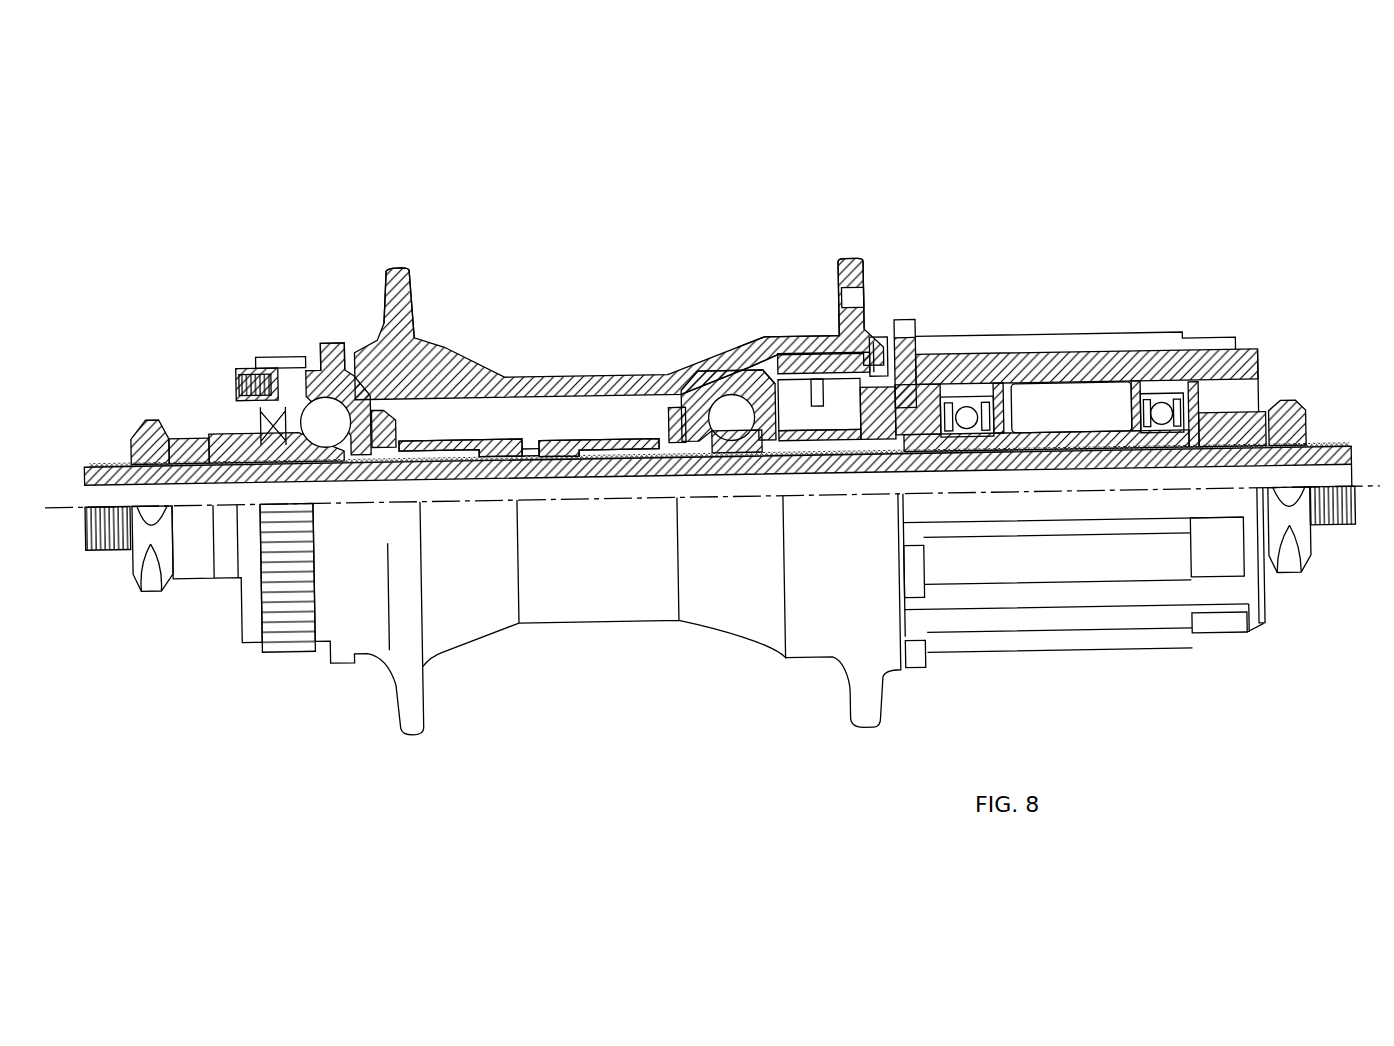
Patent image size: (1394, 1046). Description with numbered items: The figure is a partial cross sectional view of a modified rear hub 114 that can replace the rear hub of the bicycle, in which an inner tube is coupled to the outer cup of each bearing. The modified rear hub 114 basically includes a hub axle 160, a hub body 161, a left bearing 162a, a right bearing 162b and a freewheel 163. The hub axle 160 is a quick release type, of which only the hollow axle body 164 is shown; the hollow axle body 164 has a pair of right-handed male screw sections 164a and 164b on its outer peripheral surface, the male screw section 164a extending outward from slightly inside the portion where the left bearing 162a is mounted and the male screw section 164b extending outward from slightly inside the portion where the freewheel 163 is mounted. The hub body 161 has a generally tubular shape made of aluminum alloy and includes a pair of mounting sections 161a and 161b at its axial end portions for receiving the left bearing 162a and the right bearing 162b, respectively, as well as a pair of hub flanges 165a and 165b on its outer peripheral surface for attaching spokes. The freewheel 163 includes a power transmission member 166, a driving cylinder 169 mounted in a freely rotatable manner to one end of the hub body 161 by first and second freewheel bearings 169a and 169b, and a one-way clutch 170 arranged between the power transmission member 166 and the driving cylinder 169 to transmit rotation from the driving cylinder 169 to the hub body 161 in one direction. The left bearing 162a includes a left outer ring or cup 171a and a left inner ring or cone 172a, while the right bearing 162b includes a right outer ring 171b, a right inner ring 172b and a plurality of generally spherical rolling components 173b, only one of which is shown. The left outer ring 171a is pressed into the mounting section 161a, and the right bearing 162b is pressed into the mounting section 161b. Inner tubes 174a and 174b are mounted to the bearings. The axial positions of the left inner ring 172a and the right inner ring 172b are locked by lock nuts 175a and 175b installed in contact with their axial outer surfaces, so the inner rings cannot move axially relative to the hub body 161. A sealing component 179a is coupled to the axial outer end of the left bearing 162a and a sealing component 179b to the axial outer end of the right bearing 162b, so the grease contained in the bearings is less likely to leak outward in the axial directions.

The modified rear hub 114 is at (723, 226).
The hub axle 160 is at (532, 463).
The hub body 161 is at (600, 378).
The mounting section 161a is at (312, 362).
The mounting section 161b is at (753, 358).
The left bearing 162a is at (404, 426).
The right bearing 162b is at (723, 352).
The freewheel 163 is at (1076, 312).
The hollow axle body 164 is at (582, 490).
The male screw section 164a is at (104, 466).
The male screw section 164b is at (1340, 467).
The hub flange 165a is at (403, 273).
The hub flange 165b is at (853, 275).
The power transmission member 166 is at (822, 370).
The driving cylinder 169 is at (947, 370).
The first freewheel bearing 169a is at (968, 420).
The second freewheel bearing 169b is at (1160, 418).
The one-way clutch 170 is at (838, 420).
The left outer ring 171a is at (340, 350).
The right outer ring 171b is at (705, 388).
The left inner ring 172a is at (222, 440).
The right inner ring 172b is at (750, 450).
The rolling component 173b is at (340, 350).
The inner tube 174a is at (507, 436).
The inner tube 174b is at (634, 436).
The lock nut 175a is at (148, 597).
The lock nut 175b is at (1292, 597).
The sealing component 179a is at (258, 416).
The sealing component 179b is at (1198, 412).